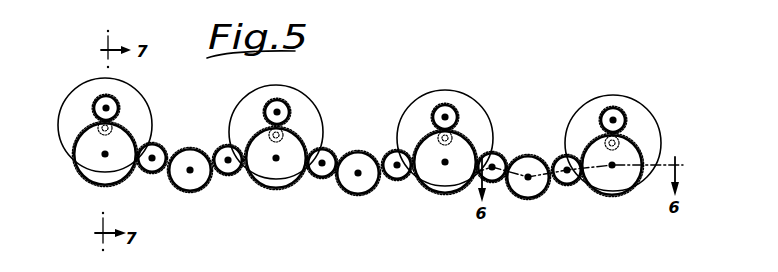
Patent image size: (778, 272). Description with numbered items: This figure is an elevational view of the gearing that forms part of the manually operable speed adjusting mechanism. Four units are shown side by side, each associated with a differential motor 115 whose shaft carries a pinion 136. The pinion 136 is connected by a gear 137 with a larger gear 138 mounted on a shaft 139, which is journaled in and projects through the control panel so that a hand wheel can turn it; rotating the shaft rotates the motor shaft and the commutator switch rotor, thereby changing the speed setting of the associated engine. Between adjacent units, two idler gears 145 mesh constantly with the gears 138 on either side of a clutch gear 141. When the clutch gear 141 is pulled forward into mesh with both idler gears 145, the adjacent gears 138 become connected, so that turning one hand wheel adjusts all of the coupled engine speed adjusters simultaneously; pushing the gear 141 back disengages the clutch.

The differential motor 115 is at (137, 107).
The pinion 136 is at (603, 136).
The gear 137 is at (103, 95).
The gear 138 is at (105, 184).
The shaft 139 is at (106, 156).
The clutch gear 141 is at (190, 190).
The idler gear 145 is at (163, 145).